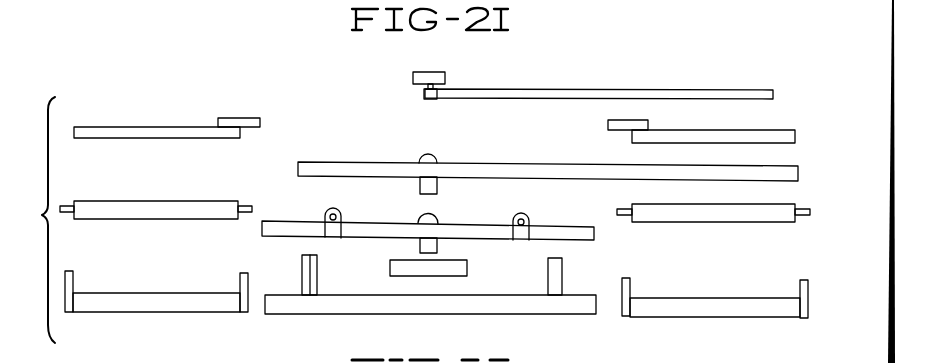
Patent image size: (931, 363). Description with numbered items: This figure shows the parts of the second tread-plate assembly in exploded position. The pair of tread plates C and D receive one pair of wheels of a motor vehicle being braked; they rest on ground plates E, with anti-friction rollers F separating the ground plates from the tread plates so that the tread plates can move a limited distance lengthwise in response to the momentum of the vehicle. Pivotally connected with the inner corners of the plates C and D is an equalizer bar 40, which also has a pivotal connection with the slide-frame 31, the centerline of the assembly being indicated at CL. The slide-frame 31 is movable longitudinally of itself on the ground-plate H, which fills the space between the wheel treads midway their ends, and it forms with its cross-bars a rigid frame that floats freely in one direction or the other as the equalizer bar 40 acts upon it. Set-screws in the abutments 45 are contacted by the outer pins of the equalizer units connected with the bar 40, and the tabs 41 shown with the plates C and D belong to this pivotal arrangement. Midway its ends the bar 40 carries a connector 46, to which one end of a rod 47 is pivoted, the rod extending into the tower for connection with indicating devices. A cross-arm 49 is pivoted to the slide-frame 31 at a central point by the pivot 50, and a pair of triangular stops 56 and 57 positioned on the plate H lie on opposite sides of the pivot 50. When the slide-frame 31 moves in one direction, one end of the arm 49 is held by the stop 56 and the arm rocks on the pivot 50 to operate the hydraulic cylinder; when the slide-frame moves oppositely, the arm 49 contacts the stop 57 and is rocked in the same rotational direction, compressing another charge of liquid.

The tread plate C is at (156, 134).
The tab 41 is at (247, 103).
The connector 46 is at (437, 79).
The rod 47 is at (578, 92).
The tread plate D is at (770, 139).
The cross-arm 49 is at (543, 168).
The pivot 50 is at (420, 186).
The equalizer bar 40 is at (482, 237).
The abutment 45 is at (327, 215).
The centerline CL is at (433, 247).
The slide-frame 31 is at (405, 271).
The triangular stop 56 is at (303, 280).
The triangular stop 57 is at (556, 284).
The ground-plate H is at (520, 318).
The anti-friction roller F is at (150, 206).
The ground plate E is at (178, 306).